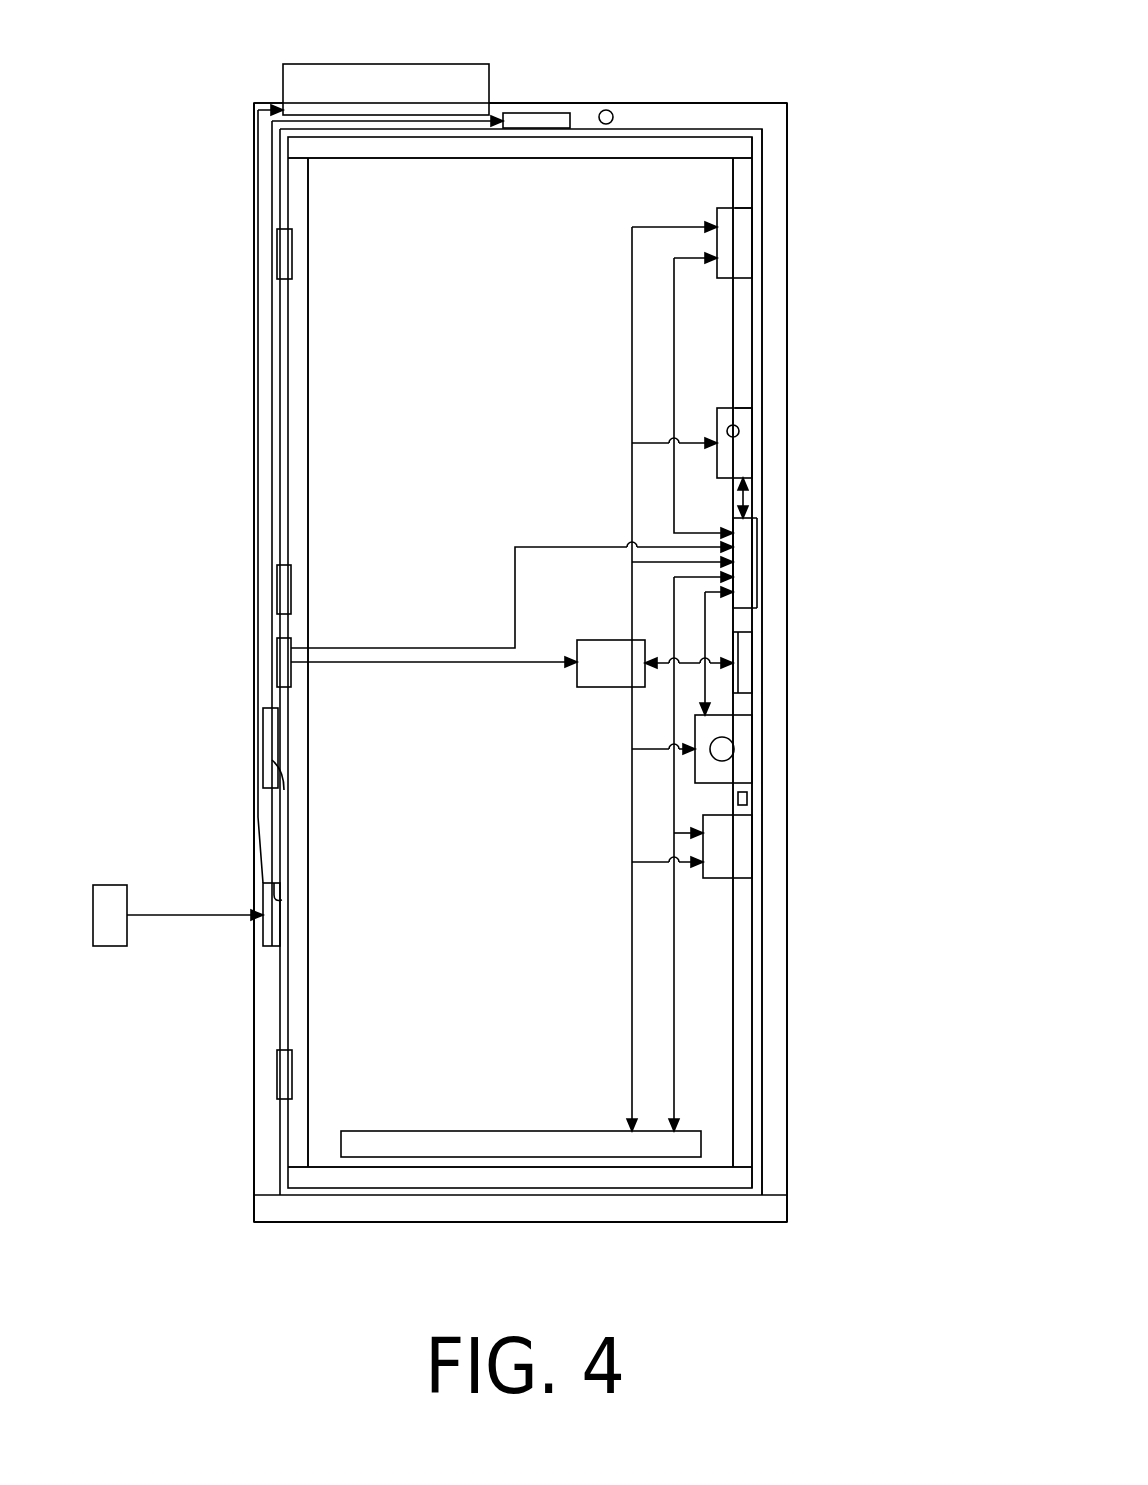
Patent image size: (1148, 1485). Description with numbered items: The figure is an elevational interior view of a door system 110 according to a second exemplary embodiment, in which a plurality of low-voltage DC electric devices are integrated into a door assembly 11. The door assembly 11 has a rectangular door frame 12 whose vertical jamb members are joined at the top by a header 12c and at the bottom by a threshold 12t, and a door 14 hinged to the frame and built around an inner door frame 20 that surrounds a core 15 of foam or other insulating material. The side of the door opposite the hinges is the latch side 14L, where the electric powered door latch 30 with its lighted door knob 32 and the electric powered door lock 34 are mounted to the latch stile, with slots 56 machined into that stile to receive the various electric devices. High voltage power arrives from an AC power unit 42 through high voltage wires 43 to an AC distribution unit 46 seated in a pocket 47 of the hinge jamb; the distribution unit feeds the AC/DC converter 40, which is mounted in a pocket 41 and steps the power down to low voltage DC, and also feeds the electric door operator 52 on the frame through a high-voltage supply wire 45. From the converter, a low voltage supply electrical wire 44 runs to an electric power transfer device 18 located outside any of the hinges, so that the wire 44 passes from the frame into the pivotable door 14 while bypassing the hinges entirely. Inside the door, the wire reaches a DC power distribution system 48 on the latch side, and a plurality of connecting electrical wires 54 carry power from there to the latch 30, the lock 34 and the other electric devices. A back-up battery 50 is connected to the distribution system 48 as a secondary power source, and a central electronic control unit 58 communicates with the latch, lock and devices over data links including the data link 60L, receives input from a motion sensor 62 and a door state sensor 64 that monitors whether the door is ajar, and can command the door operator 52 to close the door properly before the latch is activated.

The door system 110 is at (840, 135).
The door assembly 11 is at (800, 325).
The door frame 12 is at (800, 1010).
The header 12c is at (697, 103).
The threshold 12t is at (555, 1222).
The door 14 is at (360, 336).
The latch side 14L is at (752, 1125).
The core 15 is at (478, 434).
The electric power transfer device 18 is at (277, 657).
The inner door frame 20 is at (770, 1070).
The electric powered door latch 30 is at (740, 725).
The lighted door knob 32 is at (734, 750).
The electric powered door lock 34 is at (743, 853).
The AC/DC converter 40 is at (268, 735).
The pocket 41 is at (273, 772).
The AC power unit 42 is at (110, 885).
The high voltage wires 43 is at (197, 915).
The low voltage supply electrical wire 44 is at (262, 440).
The high-voltage supply wire 45 is at (268, 505).
The AC distribution unit 46 is at (272, 932).
The pocket 47 is at (284, 900).
The DC power distribution system 48 is at (600, 640).
The back-up battery 50 is at (745, 662).
The electric door operator 52 is at (385, 64).
The connecting electrical wires 54 is at (632, 305).
The slots 56 is at (742, 210).
The central electronic control unit 58 is at (745, 562).
The data link 60L is at (700, 688).
The motion sensor 62 is at (606, 110).
The door state sensor 64 is at (748, 798).